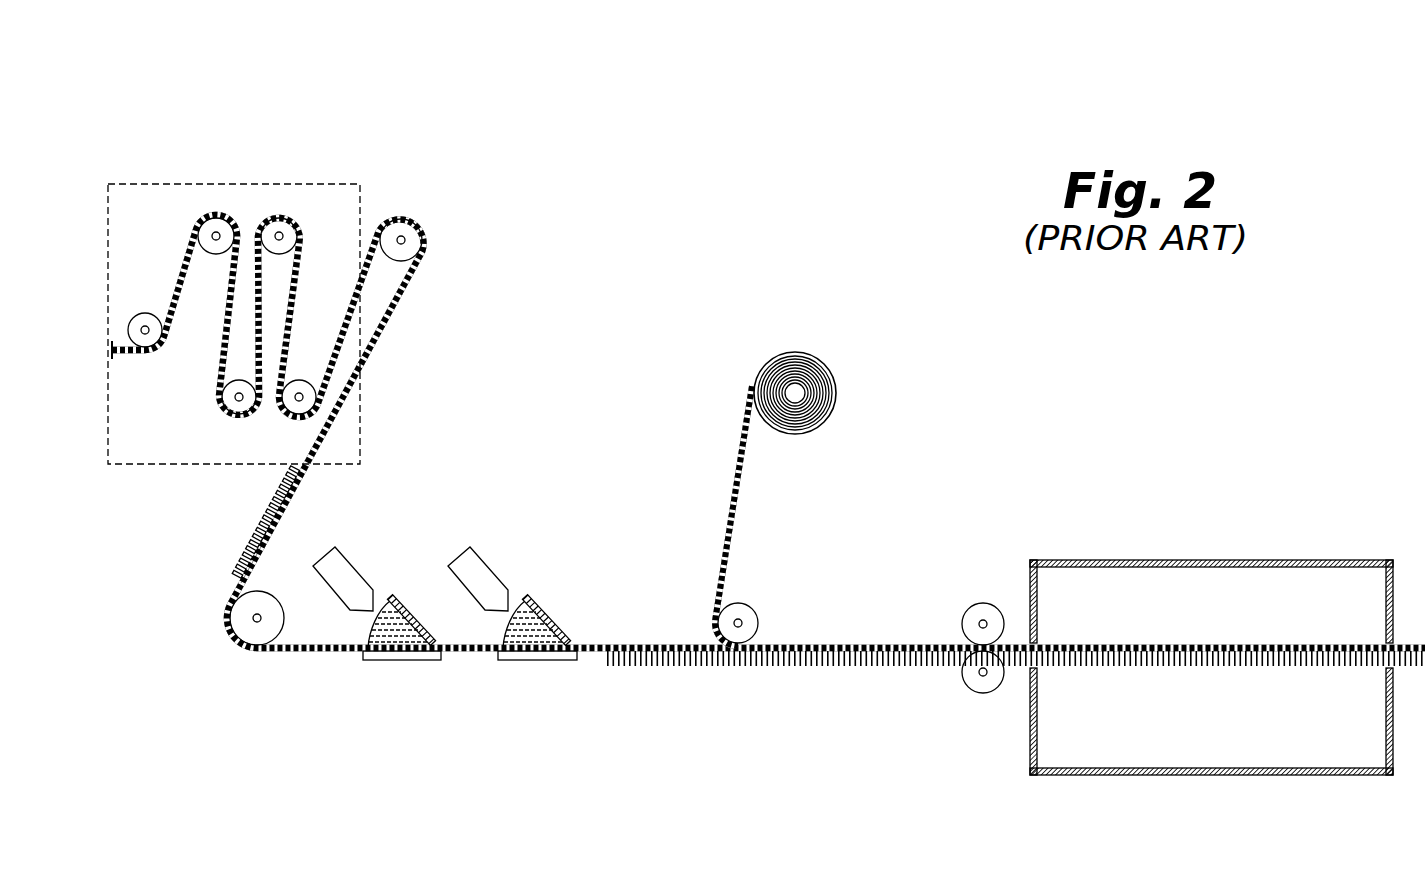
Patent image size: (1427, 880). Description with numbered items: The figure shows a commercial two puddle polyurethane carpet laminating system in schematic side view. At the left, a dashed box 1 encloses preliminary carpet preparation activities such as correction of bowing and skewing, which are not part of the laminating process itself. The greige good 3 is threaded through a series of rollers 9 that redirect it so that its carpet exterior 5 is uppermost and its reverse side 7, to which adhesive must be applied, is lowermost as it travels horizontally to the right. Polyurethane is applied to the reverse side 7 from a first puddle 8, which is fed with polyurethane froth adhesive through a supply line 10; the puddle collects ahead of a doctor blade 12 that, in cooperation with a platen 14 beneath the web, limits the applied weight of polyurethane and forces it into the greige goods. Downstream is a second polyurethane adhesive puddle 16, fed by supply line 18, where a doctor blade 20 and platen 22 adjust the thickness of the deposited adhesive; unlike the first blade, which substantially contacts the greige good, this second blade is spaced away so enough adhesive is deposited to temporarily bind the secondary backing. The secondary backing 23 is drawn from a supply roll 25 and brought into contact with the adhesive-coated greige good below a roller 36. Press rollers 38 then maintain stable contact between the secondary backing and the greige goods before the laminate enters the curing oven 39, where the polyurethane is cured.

The dashed box 1 is at (161, 472).
The greige good 3 is at (228, 560).
The carpet exterior 5 is at (267, 512).
The reverse side 7 is at (269, 536).
The puddle 8 is at (385, 632).
The rollers 9 is at (427, 240).
The supply line 10 is at (347, 558).
The doctor blade 12 is at (399, 597).
The platen 14 is at (415, 662).
The second polyurethane adhesive puddle 16 is at (517, 635).
The supply line 18 is at (453, 558).
The doctor blade 20 is at (533, 600).
The platen 22 is at (558, 662).
The secondary backing 23 is at (735, 493).
The supply roll 25 is at (835, 397).
The roller 36 is at (760, 625).
The press rollers 38 is at (980, 602).
The curing oven 39 is at (1250, 580).